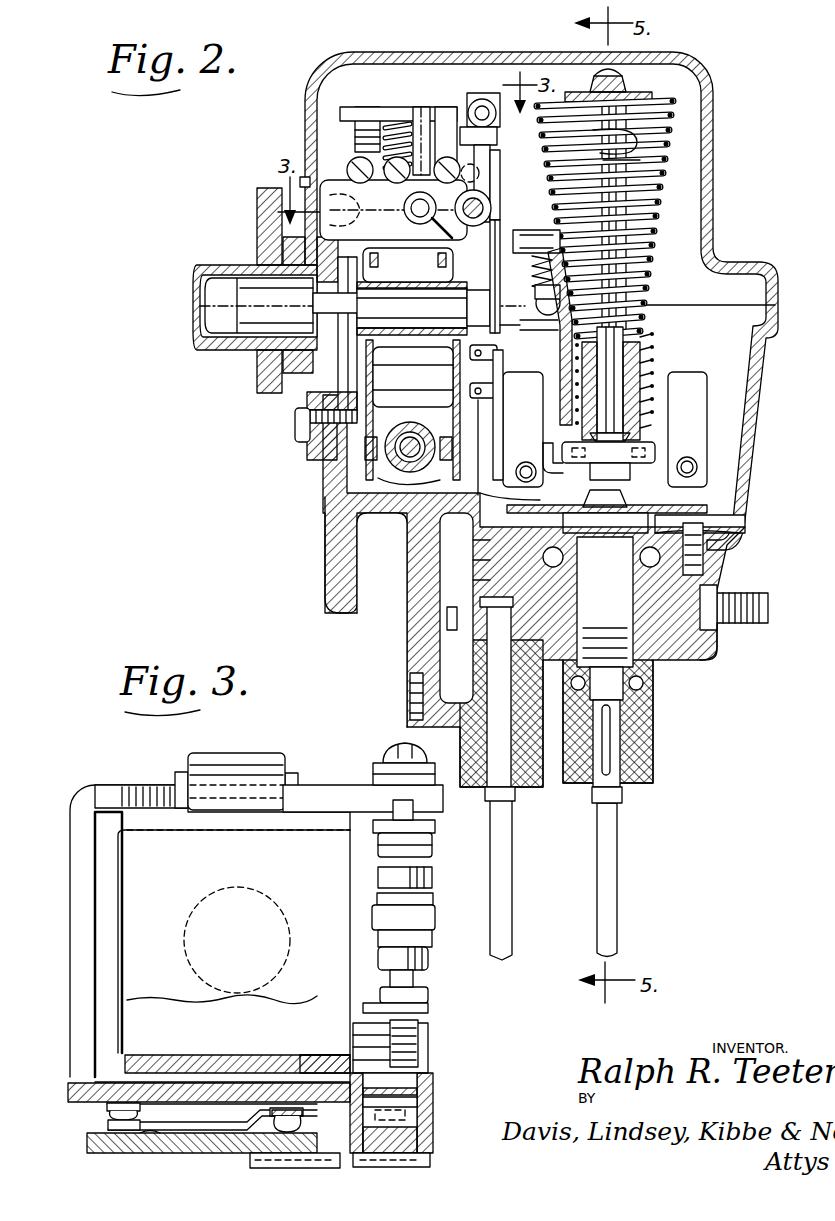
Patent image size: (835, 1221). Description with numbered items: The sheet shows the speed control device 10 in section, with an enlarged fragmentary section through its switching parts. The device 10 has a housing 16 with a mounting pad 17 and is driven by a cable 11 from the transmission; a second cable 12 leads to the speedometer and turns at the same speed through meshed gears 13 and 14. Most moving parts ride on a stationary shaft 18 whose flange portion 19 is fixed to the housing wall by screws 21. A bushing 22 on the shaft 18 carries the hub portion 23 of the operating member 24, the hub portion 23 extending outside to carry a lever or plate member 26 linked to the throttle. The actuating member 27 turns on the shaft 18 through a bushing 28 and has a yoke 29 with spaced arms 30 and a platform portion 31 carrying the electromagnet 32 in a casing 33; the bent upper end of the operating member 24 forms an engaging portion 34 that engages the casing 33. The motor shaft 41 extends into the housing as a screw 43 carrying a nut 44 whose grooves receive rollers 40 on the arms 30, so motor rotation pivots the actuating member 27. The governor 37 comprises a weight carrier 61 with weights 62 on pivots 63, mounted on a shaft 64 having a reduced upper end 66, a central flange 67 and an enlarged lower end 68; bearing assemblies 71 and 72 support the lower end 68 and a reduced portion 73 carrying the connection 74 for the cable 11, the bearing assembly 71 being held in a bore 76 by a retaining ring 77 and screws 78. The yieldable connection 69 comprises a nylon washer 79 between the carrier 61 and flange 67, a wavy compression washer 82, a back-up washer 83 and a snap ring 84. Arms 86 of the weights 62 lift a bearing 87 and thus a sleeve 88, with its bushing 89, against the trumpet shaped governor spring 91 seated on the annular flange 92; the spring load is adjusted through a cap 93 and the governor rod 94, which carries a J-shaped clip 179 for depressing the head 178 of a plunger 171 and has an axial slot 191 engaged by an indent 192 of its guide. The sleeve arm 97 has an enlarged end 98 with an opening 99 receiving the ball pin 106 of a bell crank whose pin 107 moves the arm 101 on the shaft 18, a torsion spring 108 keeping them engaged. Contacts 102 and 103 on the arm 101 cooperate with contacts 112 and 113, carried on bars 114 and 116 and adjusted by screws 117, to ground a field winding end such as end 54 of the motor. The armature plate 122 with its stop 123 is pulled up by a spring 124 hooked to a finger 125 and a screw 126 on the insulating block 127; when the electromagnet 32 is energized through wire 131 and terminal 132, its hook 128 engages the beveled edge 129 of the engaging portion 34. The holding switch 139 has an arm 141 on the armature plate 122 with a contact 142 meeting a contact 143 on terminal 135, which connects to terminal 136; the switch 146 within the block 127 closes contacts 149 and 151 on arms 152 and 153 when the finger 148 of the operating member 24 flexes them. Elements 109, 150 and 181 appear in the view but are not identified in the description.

In FIG. 2, the speed control device 10 is at (240, 136).
In FIG. 2, the cable 11 is at (612, 885).
In FIG. 2, the cable 12 is at (507, 888).
In FIG. 2, the gear 13 is at (690, 645).
In FIG. 2, the gear 14 is at (447, 617).
In FIG. 2, the housing 16 is at (713, 170).
In FIG. 2, the mounting pad 17 is at (342, 590).
In FIG. 2, the stationary shaft 18 is at (253, 267).
In FIG. 2, the flange portion 19 is at (340, 377).
In FIG. 2, the screws 21 is at (297, 436).
In FIG. 2, the bushing 22 is at (245, 353).
In FIG. 2, the hub portion 23 is at (213, 352).
In FIG. 2, the operating member 24 is at (300, 242).
In FIG. 3, the operating member 24 is at (113, 783).
In FIG. 2, the member 26 is at (257, 192).
In FIG. 2, the actuating member 27 is at (455, 405).
In FIG. 3, the actuating member 27 is at (332, 800).
In FIG. 2, the bushing 28 is at (413, 407).
In FIG. 2, the yoke 29 is at (515, 440).
In FIG. 2, the arms 30 is at (447, 352).
In FIG. 2, the platform portion 31 is at (390, 308).
In FIG. 3, the electromagnet 32 is at (275, 915).
In FIG. 3, the casing 33 is at (100, 830).
In FIG. 3, the engaging portion 34 is at (300, 790).
In FIG. 2, the governor 37 is at (672, 356).
In FIG. 2, the rollers 40 is at (397, 480).
In FIG. 2, the motor shaft 41 is at (367, 440).
In FIG. 2, the screw 43 is at (456, 607).
In FIG. 2, the nut 44 is at (380, 480).
In FIG. 3, the field winding end 54 is at (393, 745).
In FIG. 2, the governor weight carrier 61 is at (720, 515).
In FIG. 2, the governor weights 62 is at (700, 408).
In FIG. 2, the pivots 63 is at (697, 468).
In FIG. 2, the shaft 64 is at (635, 485).
In FIG. 2, the upper reduced diameter end 66 is at (603, 368).
In FIG. 2, the central annular radial flange 67 is at (525, 520).
In FIG. 2, the lower enlarged end 68 is at (620, 600).
In FIG. 2, the yieldable connection 69 is at (685, 495).
In FIG. 2, the bearing assembly 71 is at (705, 563).
In FIG. 2, the bearing assembly 72 is at (650, 681).
In FIG. 2, the reduced diameter portion 73 is at (655, 718).
In FIG. 2, the connection 74 is at (620, 742).
In FIG. 2, the bore 76 is at (570, 545).
In FIG. 2, the retaining ring 77 is at (540, 535).
In FIG. 2, the screws 78 is at (705, 533).
In FIG. 2, the washer 79 is at (700, 522).
In FIG. 2, the compression washer 82 is at (593, 508).
In FIG. 2, the back-up washer 83 is at (585, 499).
In FIG. 2, the snap ring 84 is at (630, 517).
In FIG. 2, the arm 86 is at (545, 509).
In FIG. 2, the bearing 87 is at (650, 445).
In FIG. 2, the tubular sleeve 88 is at (640, 385).
In FIG. 2, the bushing 89 is at (621, 380).
In FIG. 2, the governor spring 91 is at (640, 145).
In FIG. 2, the annular flange 92 is at (545, 445).
In FIG. 2, the cap 93 is at (630, 100).
In FIG. 2, the governor rod 94 is at (618, 212).
In FIG. 2, the arm 97 is at (555, 336).
In FIG. 2, the enlarged end 98 is at (536, 342).
In FIG. 2, the transverse opening 99 is at (556, 325).
In FIG. 2, the arm 101 is at (482, 98).
In FIG. 3, the arm 101 is at (435, 918).
In FIG. 2, the electrical contact 102 is at (480, 180).
In FIG. 3, the electrical contact 102 is at (433, 898).
In FIG. 3, the electrical contact 103 is at (425, 940).
In FIG. 2, the pin 106 is at (522, 336).
In FIG. 2, the pin 107 is at (498, 222).
In FIG. 2, the torsion spring 108 is at (478, 371).
In FIG. 2, the spring 109 is at (559, 271).
In FIG. 3, the contact 112 is at (432, 884).
In FIG. 3, the contact 113 is at (410, 975).
In FIG. 3, the bar 114 is at (435, 828).
In FIG. 3, the bar 116 is at (430, 1030).
In FIG. 3, the screws 117 is at (430, 856).
In FIG. 2, the armature plate 122 is at (438, 120).
In FIG. 3, the armature plate 122 is at (185, 880).
In FIG. 2, the stop 123 is at (370, 120).
In FIG. 2, the spring 124 is at (390, 103).
In FIG. 2, the finger 125 is at (397, 107).
In FIG. 2, the screw 126 is at (370, 163).
In FIG. 3, the insulating block 127 is at (433, 1132).
In FIG. 3, the hook 128 is at (262, 758).
In FIG. 3, the beveled upper edge 129 is at (178, 775).
In FIG. 2, the wire 131 is at (483, 215).
In FIG. 3, the wire 131 is at (430, 1160).
In FIG. 2, the terminal 132 is at (487, 200).
In FIG. 2, the terminal 135 is at (408, 266).
In FIG. 3, the terminal 135 is at (250, 1160).
In FIG. 2, the terminal 136 is at (423, 308).
In FIG. 2, the holding switch 139 is at (490, 145).
In FIG. 3, the holding switch 139 is at (265, 1115).
In FIG. 2, the arm 141 is at (419, 113).
In FIG. 3, the arm 141 is at (285, 1108).
In FIG. 3, the contact 142 is at (433, 1095).
In FIG. 3, the contact 143 is at (433, 1105).
In FIG. 3, the switch 146 is at (140, 1153).
In FIG. 3, the finger 148 is at (100, 1040).
In FIG. 3, the contact 149 is at (108, 1126).
In FIG. 3, the strip 150 is at (195, 1100).
In FIG. 3, the contact 151 is at (107, 1108).
In FIG. 2, the arm 152 is at (305, 182).
In FIG. 3, the arm 152 is at (180, 1092).
In FIG. 3, the arm 153 is at (168, 1153).
In FIG. 2, the plunger 171 is at (560, 293).
In FIG. 2, the head 178 is at (541, 233).
In FIG. 2, the J-shaped clip 179 is at (640, 158).
In FIG. 2, the arm 181 is at (640, 116).
In FIG. 2, the axial slot 191 is at (620, 256).
In FIG. 2, the indent 192 is at (630, 305).